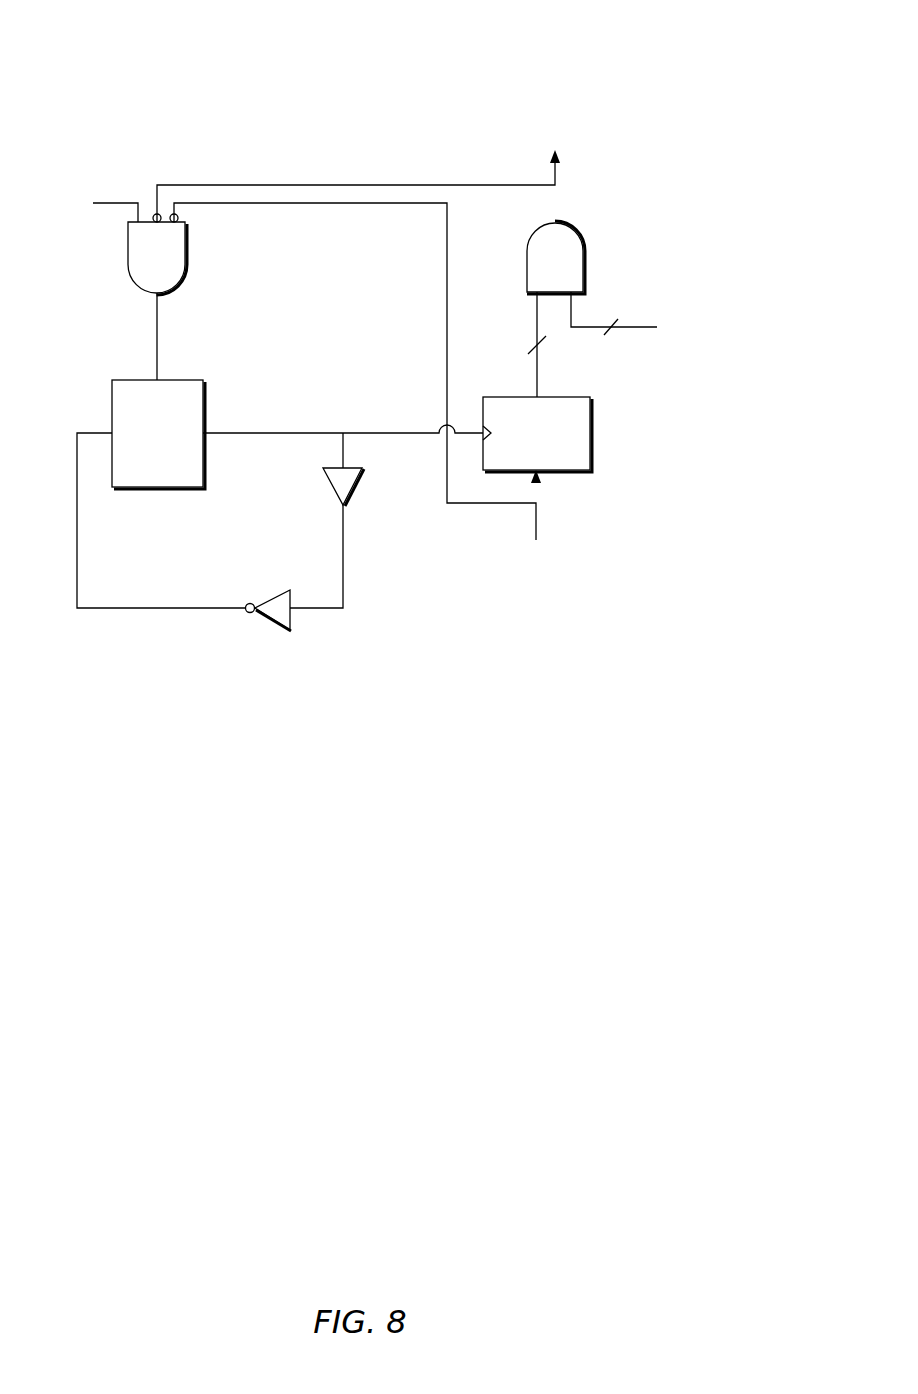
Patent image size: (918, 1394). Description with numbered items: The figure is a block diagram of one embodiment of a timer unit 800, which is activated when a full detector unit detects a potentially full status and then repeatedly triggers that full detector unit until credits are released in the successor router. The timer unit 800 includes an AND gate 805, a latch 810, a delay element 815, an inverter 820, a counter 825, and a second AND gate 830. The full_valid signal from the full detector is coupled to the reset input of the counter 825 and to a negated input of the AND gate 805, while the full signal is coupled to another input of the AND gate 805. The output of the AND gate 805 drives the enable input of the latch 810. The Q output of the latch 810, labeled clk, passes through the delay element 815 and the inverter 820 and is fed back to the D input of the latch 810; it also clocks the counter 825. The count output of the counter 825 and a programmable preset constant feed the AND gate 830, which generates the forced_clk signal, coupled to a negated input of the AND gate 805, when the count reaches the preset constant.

The timer unit 800 is at (196, 80).
The AND gate 805 is at (188, 256).
The latch 810 is at (176, 380).
The delay element 815 is at (326, 490).
The inverter 820 is at (276, 632).
The counter 825 is at (562, 397).
The AND gate 830 is at (586, 254).